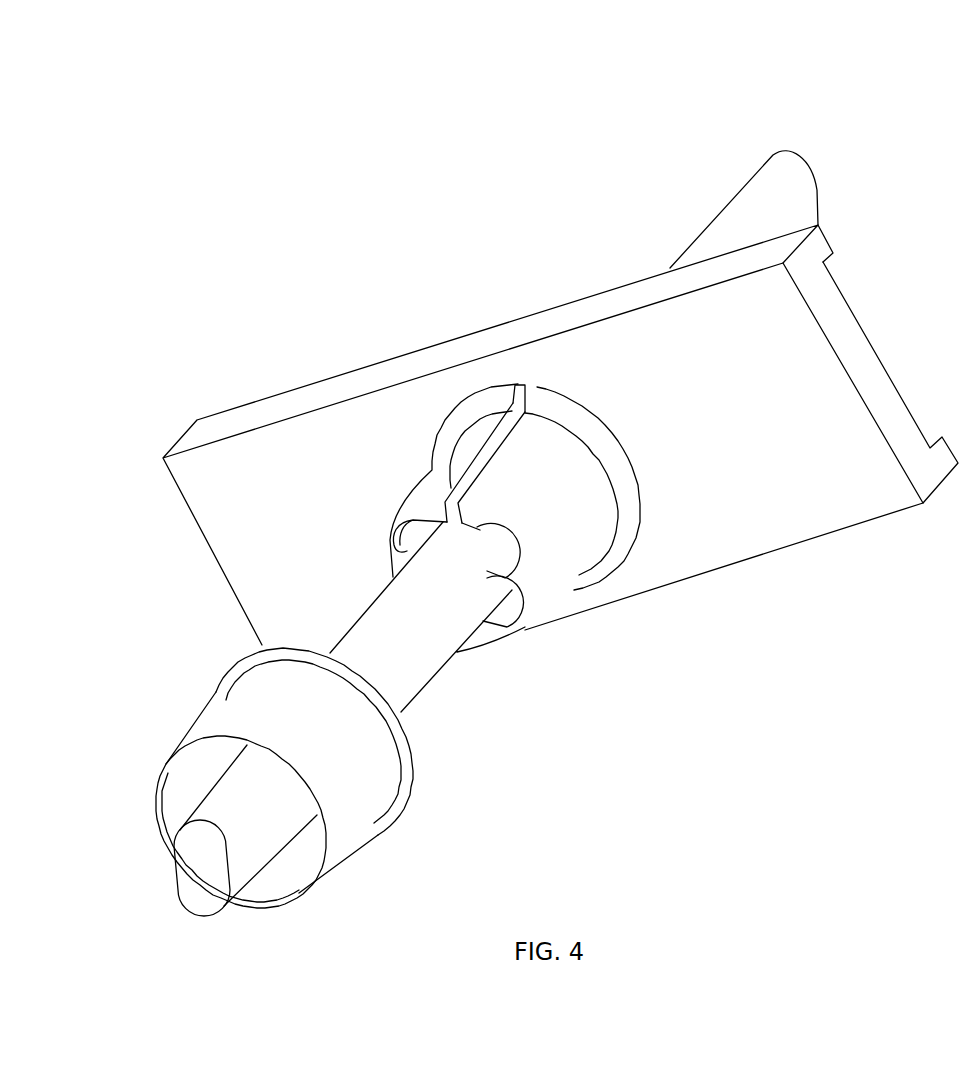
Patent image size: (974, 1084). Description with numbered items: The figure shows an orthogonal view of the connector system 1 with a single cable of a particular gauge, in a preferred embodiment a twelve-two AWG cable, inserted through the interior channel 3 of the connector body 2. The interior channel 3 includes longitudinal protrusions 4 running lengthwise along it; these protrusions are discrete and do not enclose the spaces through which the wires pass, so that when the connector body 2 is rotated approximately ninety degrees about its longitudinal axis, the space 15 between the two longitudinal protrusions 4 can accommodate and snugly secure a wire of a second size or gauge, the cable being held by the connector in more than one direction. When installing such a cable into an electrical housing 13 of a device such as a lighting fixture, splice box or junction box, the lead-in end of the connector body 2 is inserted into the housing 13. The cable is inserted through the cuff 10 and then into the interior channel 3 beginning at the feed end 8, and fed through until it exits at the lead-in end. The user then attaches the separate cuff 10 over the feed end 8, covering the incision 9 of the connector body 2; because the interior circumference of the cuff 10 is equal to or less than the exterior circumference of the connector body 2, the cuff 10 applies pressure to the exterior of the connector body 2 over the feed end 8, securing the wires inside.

The connector system 1 is at (263, 327).
The connector body 2 is at (562, 563).
The interior channel 3 is at (515, 612).
The longitudinal protrusions 4 is at (503, 570).
The feed end 8 is at (573, 473).
The incision 9 is at (526, 395).
The cuff 10 is at (361, 806).
The housing 13 is at (793, 342).
The space 15 is at (451, 543).